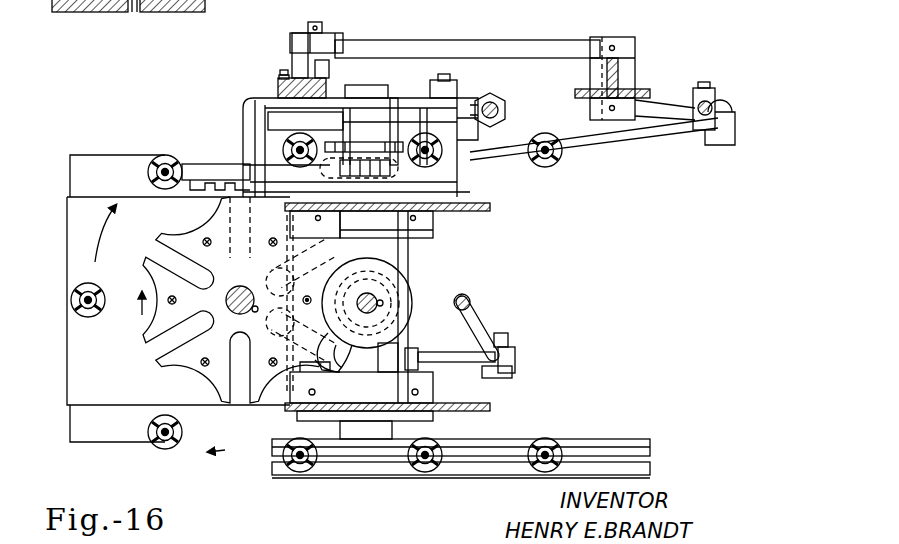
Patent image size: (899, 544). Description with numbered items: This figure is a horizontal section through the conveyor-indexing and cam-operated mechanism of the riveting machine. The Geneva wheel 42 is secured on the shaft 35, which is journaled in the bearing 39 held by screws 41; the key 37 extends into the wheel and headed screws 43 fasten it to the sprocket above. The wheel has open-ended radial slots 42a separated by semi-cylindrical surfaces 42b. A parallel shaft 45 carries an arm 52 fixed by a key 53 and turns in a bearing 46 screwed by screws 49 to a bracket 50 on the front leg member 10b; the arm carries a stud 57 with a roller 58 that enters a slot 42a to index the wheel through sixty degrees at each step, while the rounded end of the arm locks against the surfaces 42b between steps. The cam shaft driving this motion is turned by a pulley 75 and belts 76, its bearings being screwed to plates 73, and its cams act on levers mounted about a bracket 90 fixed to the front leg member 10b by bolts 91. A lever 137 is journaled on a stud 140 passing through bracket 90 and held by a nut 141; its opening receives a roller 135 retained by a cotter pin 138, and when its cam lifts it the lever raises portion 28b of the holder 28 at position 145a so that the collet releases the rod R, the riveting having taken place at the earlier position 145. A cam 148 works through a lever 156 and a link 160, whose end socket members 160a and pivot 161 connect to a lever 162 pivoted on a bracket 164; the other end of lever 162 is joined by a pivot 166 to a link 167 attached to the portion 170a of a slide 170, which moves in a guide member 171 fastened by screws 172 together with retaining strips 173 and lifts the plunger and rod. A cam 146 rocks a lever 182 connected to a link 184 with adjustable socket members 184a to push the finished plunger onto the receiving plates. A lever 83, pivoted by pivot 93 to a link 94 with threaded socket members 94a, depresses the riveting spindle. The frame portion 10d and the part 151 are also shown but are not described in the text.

The front leg member 10b is at (70, 376).
The frame tab 10d is at (70, 168).
The holder 28 is at (150, 180).
The portion of the holder 28b is at (97, 12).
The rod R is at (132, 12).
The position 145 is at (72, 299).
The position 145a is at (160, 158).
The lever 137 is at (192, 160).
The bolts 91 is at (185, 195).
The Geneva wheel 42 is at (222, 405).
The bolts or screws 41 is at (262, 214).
The bearing 39 is at (190, 272).
The slots or recesses 42a is at (148, 350).
The semi-cylindrical surfaces 42b is at (183, 375).
The shaft 35 is at (240, 288).
The key 37 is at (252, 314).
The headed screws 43 is at (300, 300).
The bracket 90 is at (262, 118).
The lever 182 is at (275, 112).
The cam 148 is at (368, 142).
The roller 135 is at (400, 170).
The cam 146 is at (397, 110).
The block 151 is at (370, 88).
The shaft or stud 140 is at (445, 80).
The nut 141 is at (450, 85).
The projecting portion 170a is at (292, 60).
The link 167 is at (290, 42).
The pivot 166 is at (316, 22).
The slide 170 is at (325, 78).
The guide member 171 is at (280, 90).
The screws 172 is at (280, 72).
The retaining strips 173 is at (279, 78).
The lever 162 is at (545, 40).
The bracket 164 is at (630, 75).
The lever 156 is at (655, 135).
The end socket members 160a is at (712, 95).
The pivot 161 is at (705, 82).
The link 160 is at (733, 140).
The link 184 is at (507, 109).
The end socket members 184a is at (502, 96).
The cotter pin 138 is at (310, 178).
The plate or bracket 50 is at (435, 230).
The plates 73 is at (433, 238).
The bolts or screws 49 is at (365, 238).
The shaft 45 is at (395, 300).
The key 53 is at (380, 300).
The bearing 46 is at (400, 330).
The arm 52 is at (350, 350).
The stud 57 is at (345, 375).
The roller 58 is at (335, 368).
The lever arm 83 is at (460, 352).
The link 94 is at (478, 315).
The socket members 94a is at (512, 340).
The pivot 93 is at (512, 372).
The pulley 75 is at (328, 478).
The belts 76 is at (597, 470).